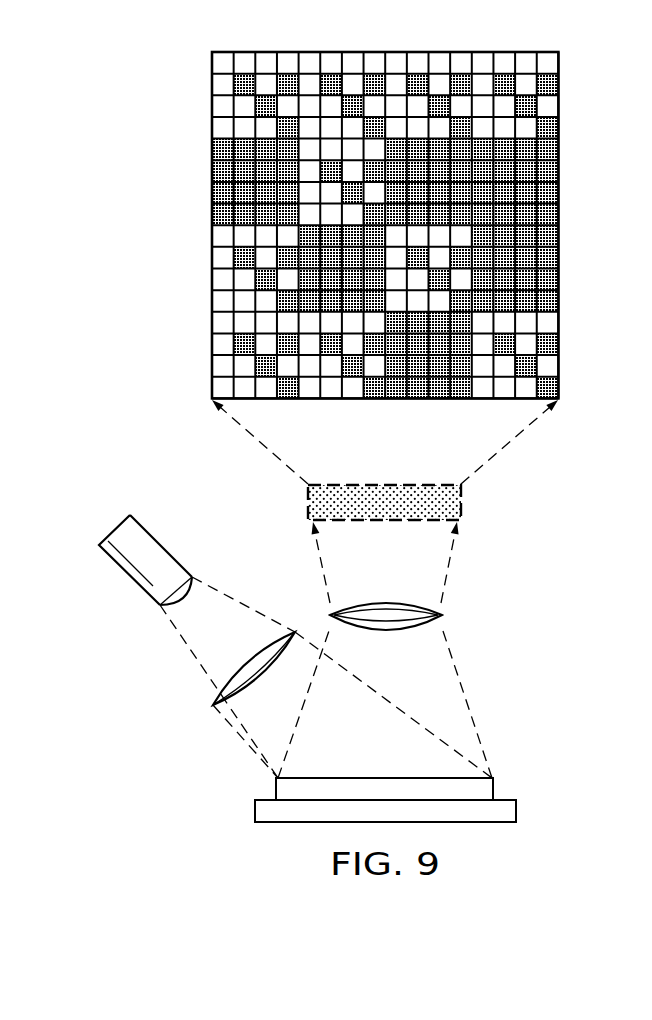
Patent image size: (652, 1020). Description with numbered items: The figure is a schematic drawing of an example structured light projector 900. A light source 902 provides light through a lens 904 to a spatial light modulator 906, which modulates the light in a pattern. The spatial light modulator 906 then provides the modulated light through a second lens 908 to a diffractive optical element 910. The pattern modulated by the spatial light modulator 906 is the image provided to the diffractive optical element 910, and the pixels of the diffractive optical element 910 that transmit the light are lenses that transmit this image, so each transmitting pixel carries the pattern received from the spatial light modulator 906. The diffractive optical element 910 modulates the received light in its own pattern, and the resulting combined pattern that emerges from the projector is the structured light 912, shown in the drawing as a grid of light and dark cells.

The structured light projector 900 is at (164, 100).
The light source 902 is at (162, 540).
The lens 904 is at (213, 713).
The spatial light modulator 906 is at (516, 810).
The lens 908 is at (386, 603).
The diffractive optical element 910 is at (461, 512).
The structured light 912 is at (559, 194).